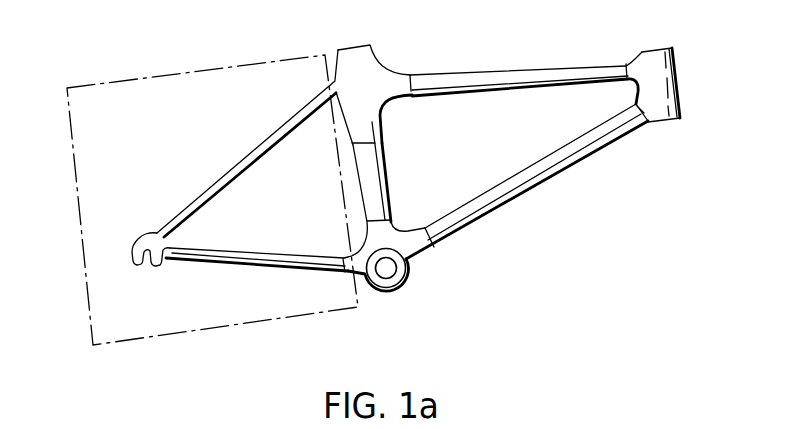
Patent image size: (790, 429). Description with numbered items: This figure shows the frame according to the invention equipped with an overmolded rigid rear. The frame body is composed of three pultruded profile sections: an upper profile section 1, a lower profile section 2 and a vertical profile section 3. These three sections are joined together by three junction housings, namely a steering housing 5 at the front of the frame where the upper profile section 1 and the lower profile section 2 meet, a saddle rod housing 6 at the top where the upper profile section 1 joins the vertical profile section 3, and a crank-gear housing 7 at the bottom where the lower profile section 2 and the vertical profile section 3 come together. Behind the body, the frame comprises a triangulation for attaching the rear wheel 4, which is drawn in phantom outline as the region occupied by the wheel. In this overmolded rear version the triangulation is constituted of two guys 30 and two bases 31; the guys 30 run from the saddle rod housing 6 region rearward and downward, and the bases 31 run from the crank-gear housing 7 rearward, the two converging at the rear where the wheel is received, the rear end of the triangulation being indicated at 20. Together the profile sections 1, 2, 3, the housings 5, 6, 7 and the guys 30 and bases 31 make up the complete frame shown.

The upper profile section 1 is at (488, 79).
The lower profile section 2 is at (511, 186).
The vertical profile section 3 is at (383, 169).
The rear wheel 4 is at (139, 78).
The steering housing 5 is at (683, 77).
The saddle rod housing 6 is at (368, 76).
The crank-gear housing 7 is at (421, 249).
The rear dropout 20 is at (135, 243).
The guys 30 is at (227, 176).
The bases 31 is at (239, 260).